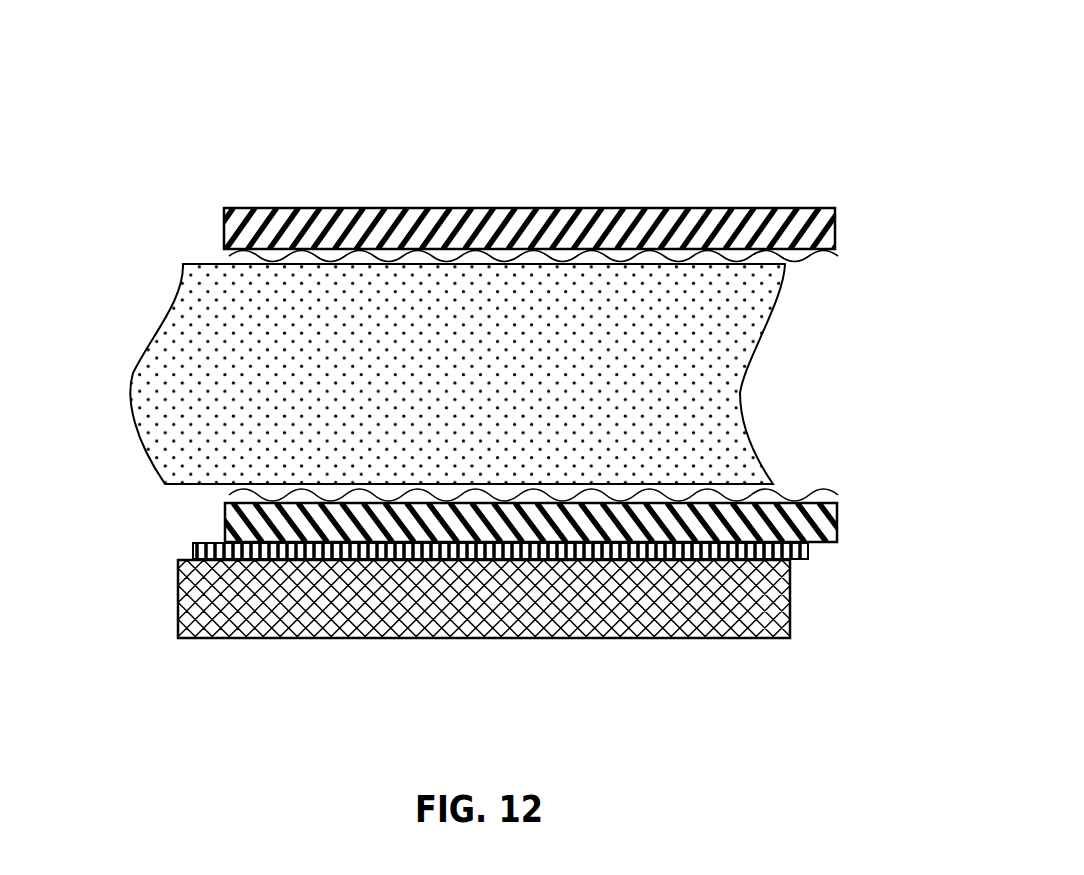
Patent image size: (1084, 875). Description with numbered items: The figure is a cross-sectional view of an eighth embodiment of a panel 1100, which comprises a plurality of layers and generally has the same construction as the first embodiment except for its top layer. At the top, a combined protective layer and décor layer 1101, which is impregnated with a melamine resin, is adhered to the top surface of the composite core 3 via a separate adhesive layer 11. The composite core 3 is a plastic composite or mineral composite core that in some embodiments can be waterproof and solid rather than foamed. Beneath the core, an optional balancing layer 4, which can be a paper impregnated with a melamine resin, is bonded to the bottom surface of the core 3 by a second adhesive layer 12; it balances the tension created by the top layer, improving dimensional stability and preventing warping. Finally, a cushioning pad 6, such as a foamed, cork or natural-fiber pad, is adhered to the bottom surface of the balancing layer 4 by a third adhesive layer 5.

The panel 1100 is at (168, 74).
The décor layer 1101 is at (803, 219).
The adhesive layer 11 is at (225, 252).
The composite core 3 is at (203, 357).
The second adhesive layer 12 is at (800, 486).
The balancing layer 4 is at (812, 530).
The third adhesive layer 5 is at (197, 547).
The cushioning pad 6 is at (200, 595).